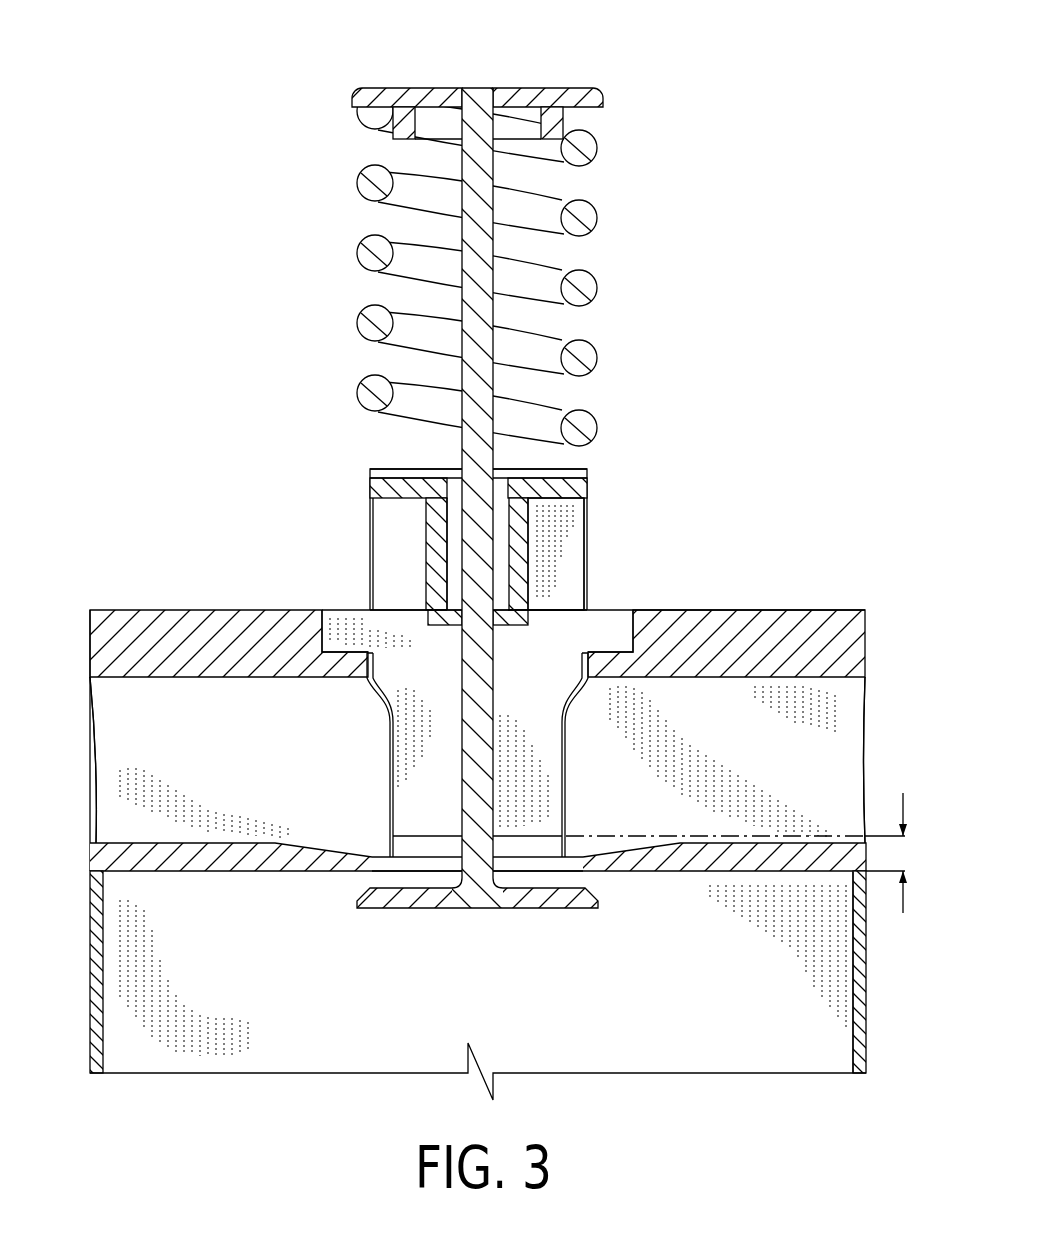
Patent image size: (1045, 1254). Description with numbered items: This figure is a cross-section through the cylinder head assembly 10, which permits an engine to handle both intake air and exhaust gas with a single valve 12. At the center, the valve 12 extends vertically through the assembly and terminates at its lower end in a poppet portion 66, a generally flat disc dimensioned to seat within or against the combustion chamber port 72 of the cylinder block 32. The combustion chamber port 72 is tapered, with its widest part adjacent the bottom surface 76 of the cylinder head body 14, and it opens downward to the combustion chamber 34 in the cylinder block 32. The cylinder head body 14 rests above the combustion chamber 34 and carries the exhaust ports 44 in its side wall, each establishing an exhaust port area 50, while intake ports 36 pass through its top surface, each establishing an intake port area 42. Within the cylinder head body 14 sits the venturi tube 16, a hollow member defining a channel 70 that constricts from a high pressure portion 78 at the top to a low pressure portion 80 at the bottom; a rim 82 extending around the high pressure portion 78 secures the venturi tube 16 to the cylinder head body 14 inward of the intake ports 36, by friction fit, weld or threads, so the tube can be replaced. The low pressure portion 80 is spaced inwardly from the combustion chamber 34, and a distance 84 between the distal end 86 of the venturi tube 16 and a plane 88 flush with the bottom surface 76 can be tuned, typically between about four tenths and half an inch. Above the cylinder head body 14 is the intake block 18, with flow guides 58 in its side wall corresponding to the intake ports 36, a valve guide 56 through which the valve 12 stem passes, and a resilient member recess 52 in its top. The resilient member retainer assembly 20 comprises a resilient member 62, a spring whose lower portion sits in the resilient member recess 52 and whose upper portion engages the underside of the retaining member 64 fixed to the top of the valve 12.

The cylinder head assembly 10 is at (607, 48).
The valve 12 is at (498, 910).
The cylinder head body 14 is at (797, 610).
The venturi tube 16 is at (566, 772).
The intake block 18 is at (587, 490).
The resilient member retainer assembly 20 is at (602, 232).
The cylinder block 32 is at (867, 1008).
The combustion chamber 34 is at (818, 1045).
The intake ports 36 is at (610, 602).
The intake port area 42 is at (423, 603).
The exhaust ports 44 is at (95, 757).
The exhaust port area 50 is at (82, 678).
The resilient member recess 52 is at (403, 468).
The valve guide 56 is at (453, 483).
The flow guides 58 is at (587, 528).
The resilient member 62 is at (600, 155).
The retaining member 64 is at (378, 87).
The poppet portion 66 is at (422, 910).
The channel 70 is at (534, 757).
The combustion chamber port 72 is at (383, 877).
The bottom surface 76 is at (167, 872).
The high pressure portion 78 is at (578, 678).
The low pressure portion 80 is at (394, 802).
The rim 82 is at (367, 680).
The distance 84 is at (912, 848).
The distal end 86 is at (383, 845).
The plane 88 is at (597, 872).